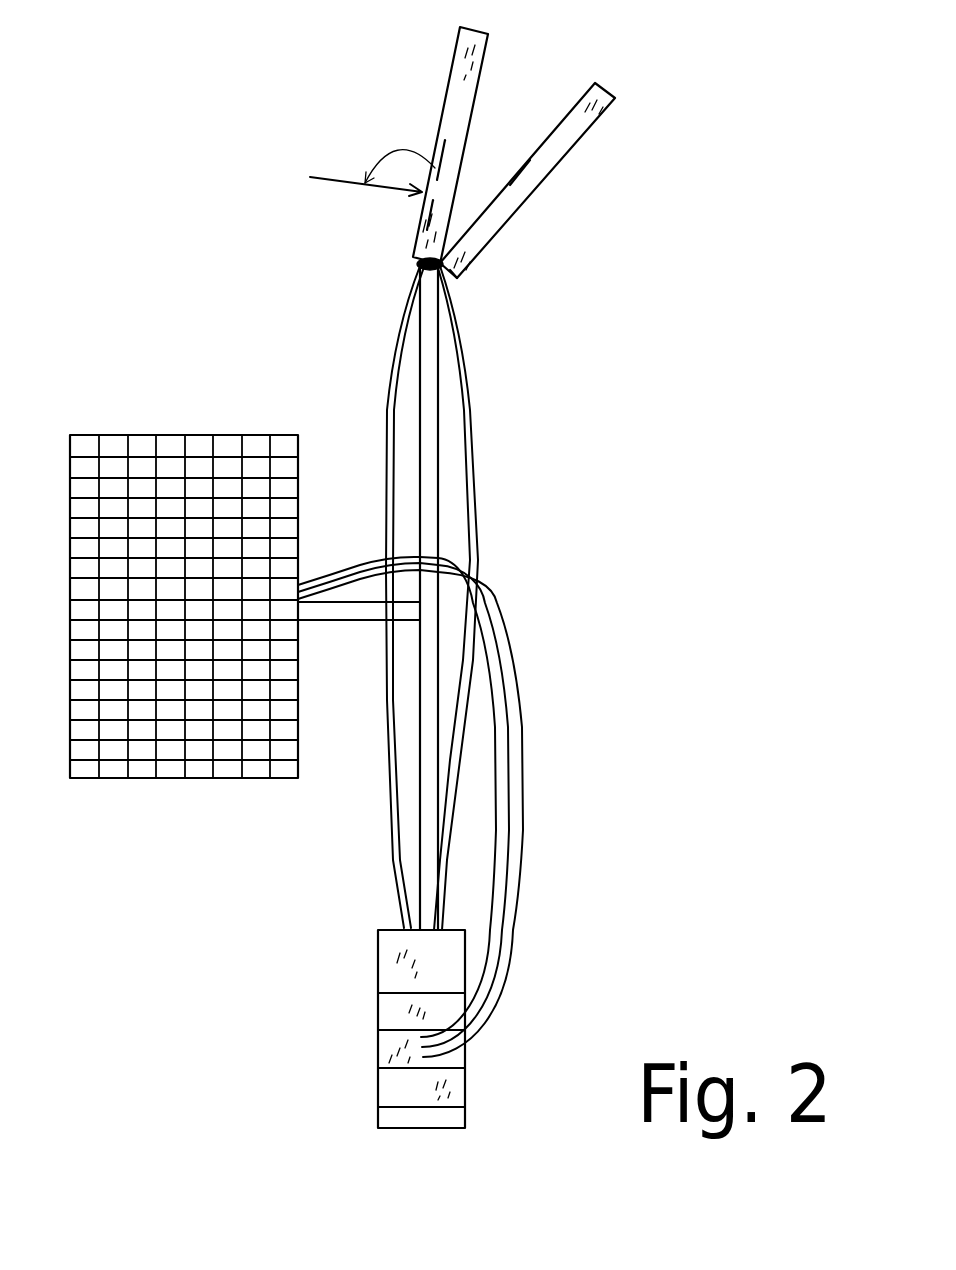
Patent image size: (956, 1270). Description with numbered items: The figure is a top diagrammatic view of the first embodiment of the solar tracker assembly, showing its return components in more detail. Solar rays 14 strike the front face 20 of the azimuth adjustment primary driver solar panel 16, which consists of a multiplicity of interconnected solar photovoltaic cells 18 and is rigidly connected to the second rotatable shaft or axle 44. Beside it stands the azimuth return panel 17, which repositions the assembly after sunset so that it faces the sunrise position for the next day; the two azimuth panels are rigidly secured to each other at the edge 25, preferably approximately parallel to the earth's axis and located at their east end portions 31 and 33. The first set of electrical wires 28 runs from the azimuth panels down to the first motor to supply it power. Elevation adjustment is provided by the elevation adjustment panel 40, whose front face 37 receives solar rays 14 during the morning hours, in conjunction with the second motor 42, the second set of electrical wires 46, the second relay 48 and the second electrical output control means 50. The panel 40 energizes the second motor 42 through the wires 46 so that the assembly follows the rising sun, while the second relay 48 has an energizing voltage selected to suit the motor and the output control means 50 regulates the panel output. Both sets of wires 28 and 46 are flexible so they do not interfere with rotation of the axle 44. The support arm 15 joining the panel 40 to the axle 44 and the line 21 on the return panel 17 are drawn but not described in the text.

The wind direction arrow 14 is at (320, 185).
The support arm 15 is at (377, 623).
The first wing panel 16 is at (449, 67).
The second wing panel 17 is at (589, 152).
The tail sail lower edge 18 is at (252, 732).
The inner surface of first panel 20 is at (435, 143).
The inner surface of second panel 21 is at (523, 200).
The pivot joint 25 is at (417, 257).
The tether lines 28 is at (468, 407).
The lower portion of first panel 31 is at (427, 218).
The lower portion of second panel 33 is at (465, 263).
The mesh sail 37 is at (154, 633).
The tail assembly 40 is at (154, 638).
The base housing 42 is at (418, 1029).
The mast 44 is at (415, 867).
The control cables 46 is at (518, 853).
The base bottom section 48 is at (458, 1100).
The cable connector section 50 is at (378, 1055).